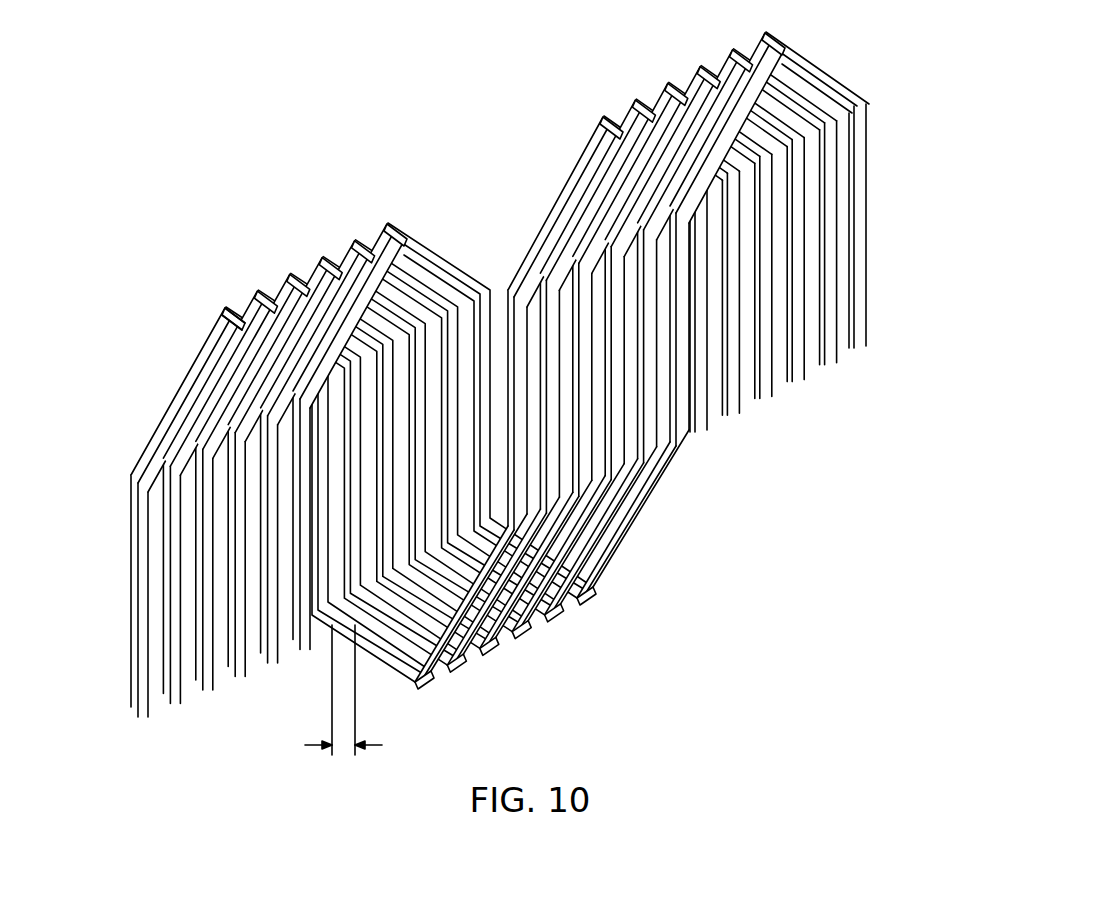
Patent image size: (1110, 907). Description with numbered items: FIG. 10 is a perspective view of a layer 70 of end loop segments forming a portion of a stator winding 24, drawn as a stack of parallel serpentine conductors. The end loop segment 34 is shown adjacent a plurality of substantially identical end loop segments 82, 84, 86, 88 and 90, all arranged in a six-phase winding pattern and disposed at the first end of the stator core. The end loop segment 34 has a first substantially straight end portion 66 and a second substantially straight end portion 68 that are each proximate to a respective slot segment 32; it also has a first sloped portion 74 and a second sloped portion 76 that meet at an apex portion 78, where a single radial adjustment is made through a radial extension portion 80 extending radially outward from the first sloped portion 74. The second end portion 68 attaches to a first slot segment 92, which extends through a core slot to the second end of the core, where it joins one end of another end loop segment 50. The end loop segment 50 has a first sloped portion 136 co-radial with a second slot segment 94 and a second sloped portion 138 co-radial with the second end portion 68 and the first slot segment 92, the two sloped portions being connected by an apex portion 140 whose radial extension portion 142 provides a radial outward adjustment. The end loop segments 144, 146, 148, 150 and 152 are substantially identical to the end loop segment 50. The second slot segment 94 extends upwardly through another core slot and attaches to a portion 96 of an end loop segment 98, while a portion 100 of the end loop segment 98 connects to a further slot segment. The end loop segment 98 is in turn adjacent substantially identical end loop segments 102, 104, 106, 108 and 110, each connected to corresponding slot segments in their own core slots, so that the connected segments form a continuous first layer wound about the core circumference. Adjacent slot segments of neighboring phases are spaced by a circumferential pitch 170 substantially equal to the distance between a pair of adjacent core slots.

The stator winding 24 is at (452, 392).
The slot segment 32 is at (142, 645).
The end loop segment 34 is at (150, 440).
The end loop segment 50 is at (418, 693).
The first substantially straight end portion 66 is at (140, 520).
The second substantially straight end portion 68 is at (333, 428).
The layer 70 is at (117, 712).
The first sloped portion 74 is at (185, 397).
The second sloped portion 76 is at (238, 312).
The apex portion 78 is at (232, 324).
The radial extension portion 80 is at (222, 313).
The end loop segment 82 is at (258, 288).
The end loop segment 84 is at (292, 272).
The end loop segment 86 is at (325, 255).
The end loop segment 88 is at (358, 238).
The end loop segment 90 is at (390, 222).
The first slot segment 92 is at (303, 470).
The second slot segment 94 is at (530, 342).
The portion of end loop segment 98 96 is at (517, 375).
The end loop segment 98 is at (605, 128).
The portion of end loop segment 98 100 is at (712, 352).
The end loop segment 102 is at (637, 103).
The end loop segment 104 is at (668, 85).
The end loop segment 106 is at (703, 70).
The end loop segment 108 is at (733, 50).
The end loop segment 110 is at (768, 45).
The first sloped portion 136 is at (489, 672).
The second sloped portion 138 is at (385, 655).
The apex portion 140 is at (410, 697).
The radial extension portion 142 is at (432, 686).
The end loop segment 144 is at (462, 682).
The end loop segment 146 is at (510, 652).
The end loop segment 148 is at (545, 638).
The end loop segment 150 is at (578, 624).
The end loop segment 152 is at (598, 603).
The circumferential pitch 170 is at (343, 712).